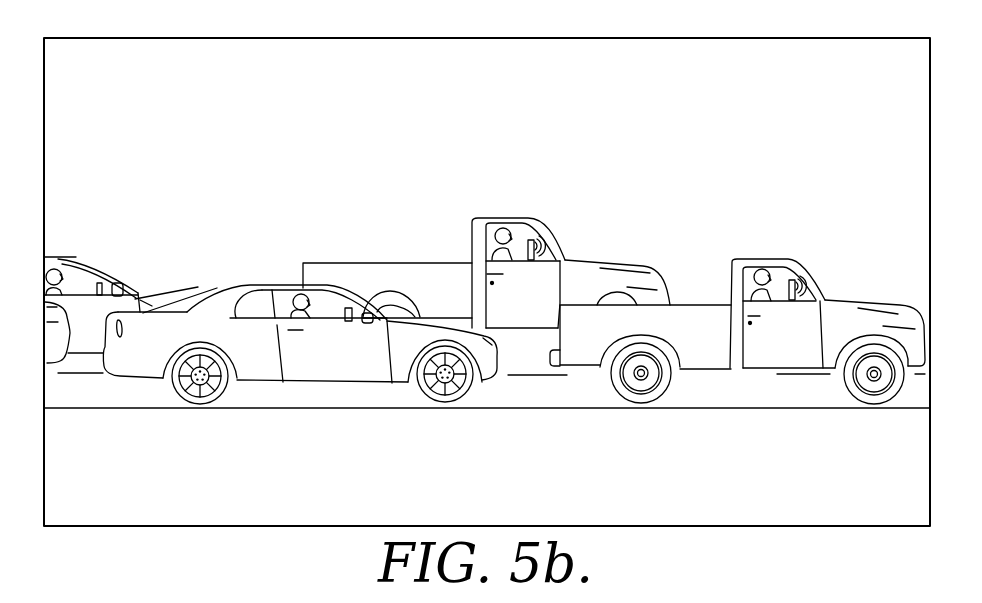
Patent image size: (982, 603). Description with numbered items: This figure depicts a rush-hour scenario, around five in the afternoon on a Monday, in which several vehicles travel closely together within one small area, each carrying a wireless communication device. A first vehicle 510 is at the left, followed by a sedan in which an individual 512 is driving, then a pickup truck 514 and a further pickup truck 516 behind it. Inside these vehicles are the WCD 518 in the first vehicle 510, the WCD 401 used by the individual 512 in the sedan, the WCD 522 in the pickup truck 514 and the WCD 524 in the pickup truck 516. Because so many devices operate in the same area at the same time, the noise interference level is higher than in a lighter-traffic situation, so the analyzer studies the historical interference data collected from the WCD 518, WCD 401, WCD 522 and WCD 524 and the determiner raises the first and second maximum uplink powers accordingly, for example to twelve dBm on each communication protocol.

The first vehicle 510 is at (120, 288).
The individual 512 is at (300, 319).
The third vehicle (pickup truck) 514 is at (486, 296).
The fourth vehicle (pickup truck) 516 is at (737, 331).
The WCD 518 is at (124, 283).
The WCD 401 is at (347, 322).
The WCD 522 is at (532, 262).
The WCD 524 is at (790, 303).